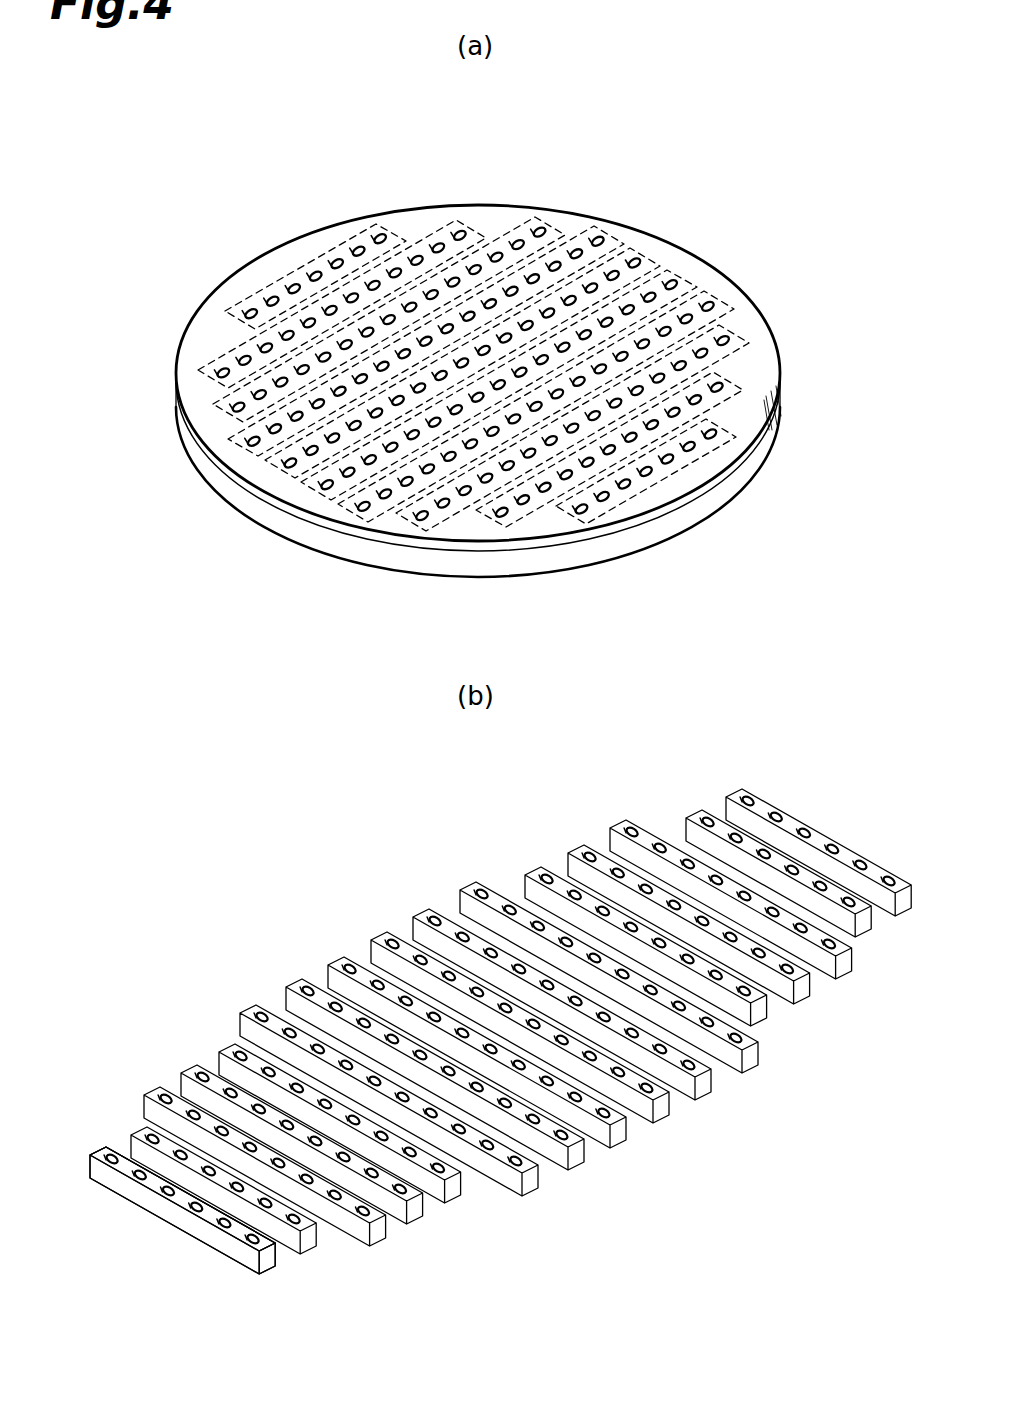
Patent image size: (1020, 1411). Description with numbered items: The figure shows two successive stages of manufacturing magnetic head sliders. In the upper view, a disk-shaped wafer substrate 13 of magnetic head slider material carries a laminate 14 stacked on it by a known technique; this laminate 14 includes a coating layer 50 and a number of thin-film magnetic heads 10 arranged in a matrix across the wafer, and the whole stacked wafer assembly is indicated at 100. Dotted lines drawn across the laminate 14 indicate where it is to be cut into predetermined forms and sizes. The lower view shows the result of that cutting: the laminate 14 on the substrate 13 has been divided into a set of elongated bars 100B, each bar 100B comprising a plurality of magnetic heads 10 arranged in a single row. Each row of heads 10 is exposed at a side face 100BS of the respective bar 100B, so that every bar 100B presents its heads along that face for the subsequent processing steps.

The wafer assembly 100 is at (782, 176).
The thin-film magnetic head 10 is at (617, 272).
The coating layer 50 is at (682, 263).
The laminate 14 is at (773, 430).
The substrate 13 is at (750, 468).
The side face 100BS is at (105, 1180).
The bar 100B is at (270, 1273).